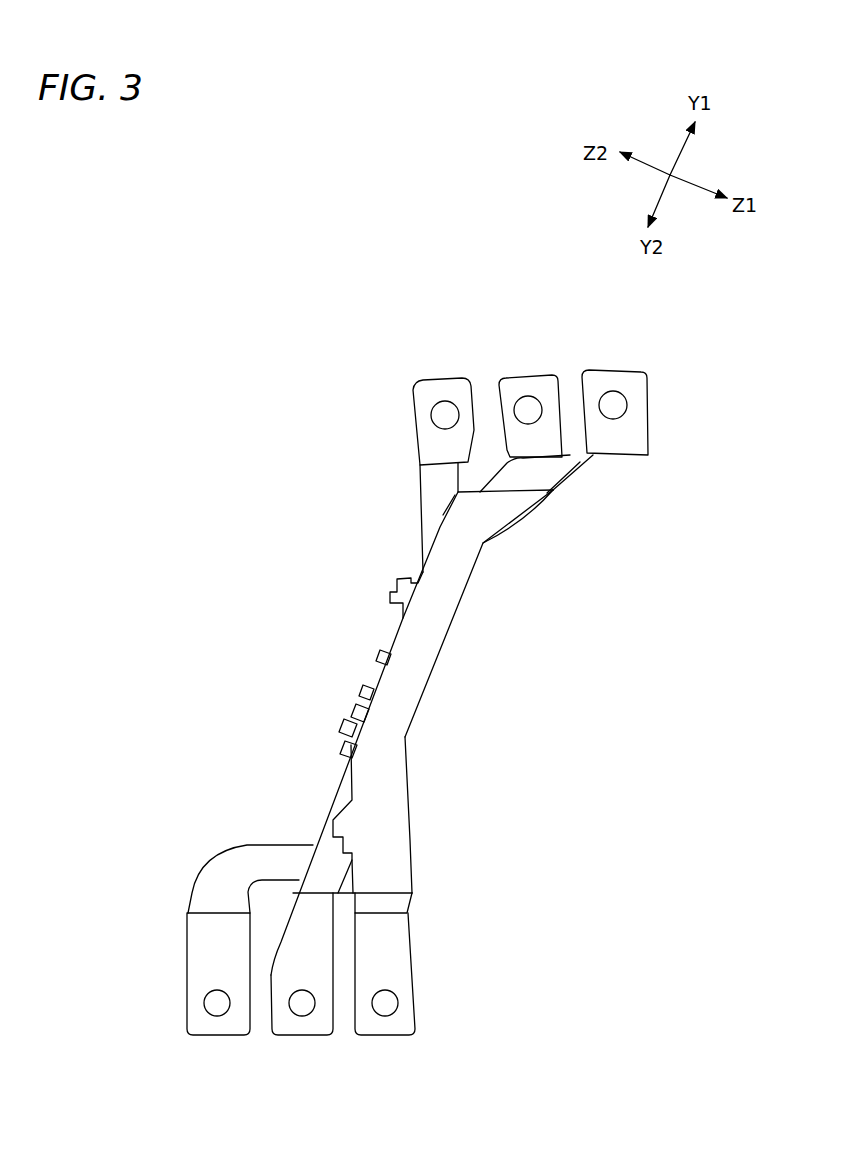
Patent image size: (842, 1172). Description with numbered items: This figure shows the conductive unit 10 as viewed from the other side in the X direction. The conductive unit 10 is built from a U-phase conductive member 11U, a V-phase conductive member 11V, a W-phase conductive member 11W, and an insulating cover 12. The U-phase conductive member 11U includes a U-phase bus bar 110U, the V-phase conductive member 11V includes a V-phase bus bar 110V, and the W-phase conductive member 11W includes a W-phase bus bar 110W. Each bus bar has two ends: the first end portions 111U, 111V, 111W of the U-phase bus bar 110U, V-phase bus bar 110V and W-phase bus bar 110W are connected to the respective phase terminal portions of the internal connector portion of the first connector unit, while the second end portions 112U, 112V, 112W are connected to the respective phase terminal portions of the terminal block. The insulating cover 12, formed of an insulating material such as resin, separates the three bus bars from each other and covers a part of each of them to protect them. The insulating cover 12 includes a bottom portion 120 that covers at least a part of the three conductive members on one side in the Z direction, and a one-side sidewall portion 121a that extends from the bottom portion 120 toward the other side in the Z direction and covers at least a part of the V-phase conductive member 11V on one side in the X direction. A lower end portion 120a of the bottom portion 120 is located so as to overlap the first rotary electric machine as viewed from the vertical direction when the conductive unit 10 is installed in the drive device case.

The conductive unit 10 is at (248, 432).
The U-phase conductive member 11U is at (428, 475).
The V-phase conductive member 11V is at (298, 923).
The W-phase conductive member 11W is at (547, 472).
The U-phase bus bar 110U is at (437, 518).
The V-phase bus bar 110V is at (312, 910).
The W-phase bus bar 110W is at (398, 920).
The first end portion 111U is at (445, 395).
The first end portion 111V is at (530, 387).
The first end portion 111W is at (615, 378).
The second end portion 112U is at (217, 1025).
The second end portion 112V is at (302, 1025).
The second end portion 112W is at (385, 1025).
The insulating cover 12 is at (383, 797).
The bottom portion 120 is at (438, 667).
The lower end portion 120a is at (345, 893).
The one-side sidewall portion 121a is at (440, 613).